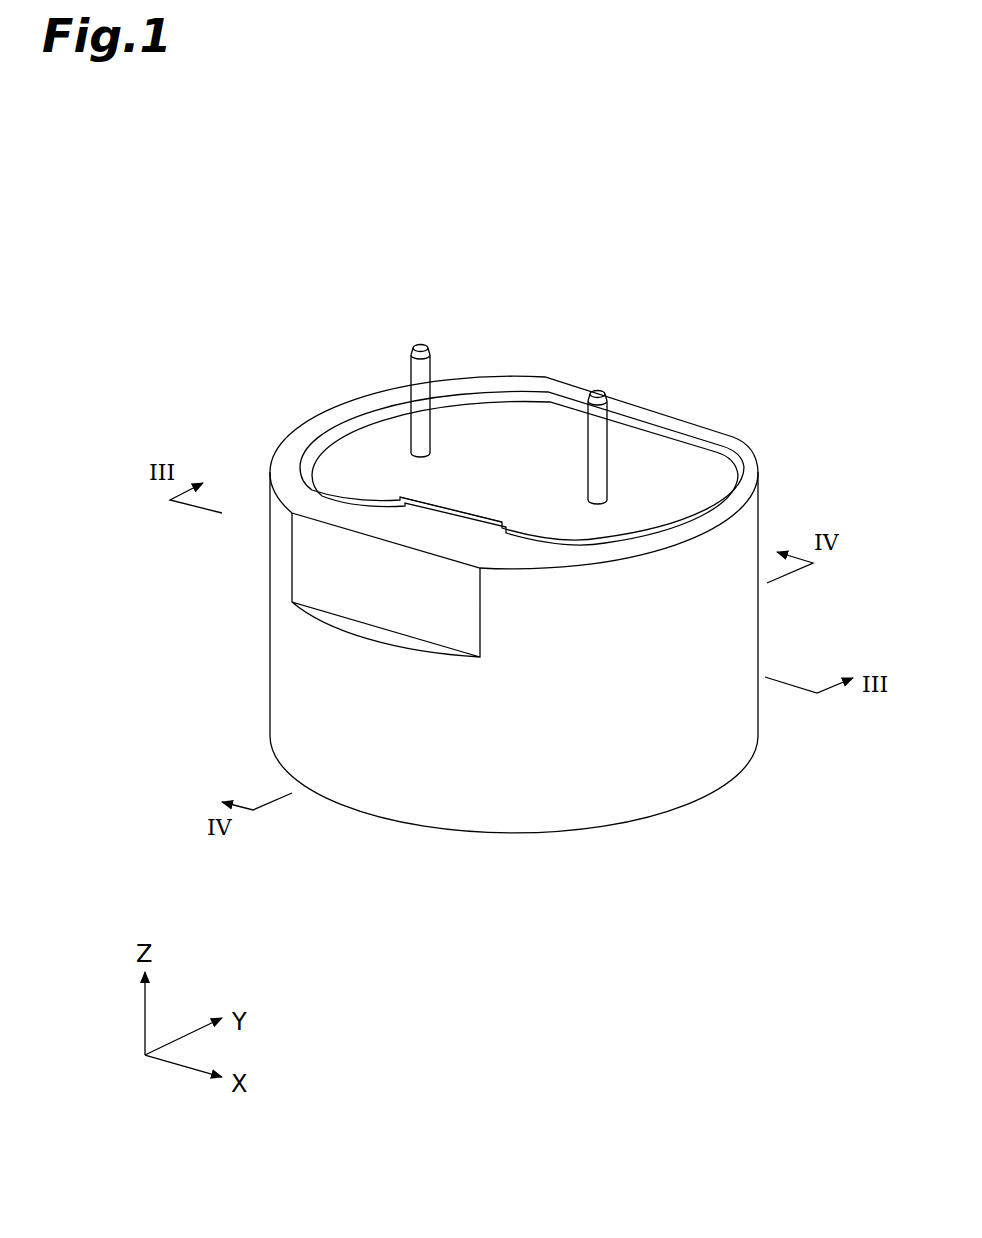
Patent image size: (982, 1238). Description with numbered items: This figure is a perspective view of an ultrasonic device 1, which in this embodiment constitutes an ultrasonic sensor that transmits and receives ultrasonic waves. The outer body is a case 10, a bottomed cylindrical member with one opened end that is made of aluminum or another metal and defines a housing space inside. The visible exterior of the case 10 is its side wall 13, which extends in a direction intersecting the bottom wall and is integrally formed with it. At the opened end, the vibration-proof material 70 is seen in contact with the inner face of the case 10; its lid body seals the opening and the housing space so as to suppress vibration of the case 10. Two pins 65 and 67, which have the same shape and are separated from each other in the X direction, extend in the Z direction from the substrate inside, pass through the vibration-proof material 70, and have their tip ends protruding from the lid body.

The ultrasonic device 1 is at (271, 283).
The case 10 is at (762, 630).
The side wall 13 is at (292, 678).
The pin 65 is at (411, 373).
The pin 67 is at (609, 448).
The vibration-proof material 70 is at (365, 453).